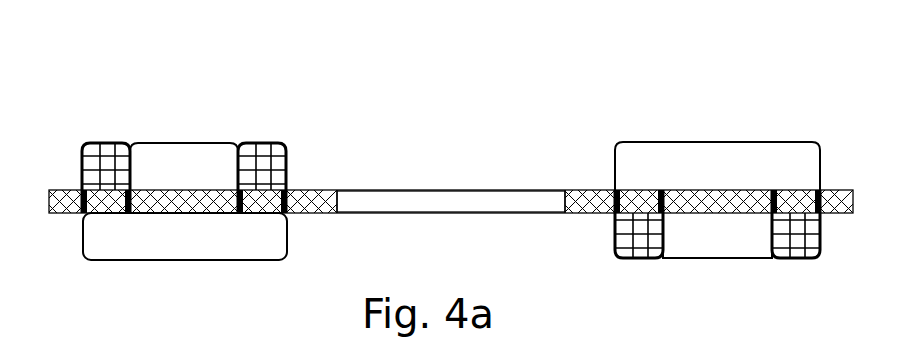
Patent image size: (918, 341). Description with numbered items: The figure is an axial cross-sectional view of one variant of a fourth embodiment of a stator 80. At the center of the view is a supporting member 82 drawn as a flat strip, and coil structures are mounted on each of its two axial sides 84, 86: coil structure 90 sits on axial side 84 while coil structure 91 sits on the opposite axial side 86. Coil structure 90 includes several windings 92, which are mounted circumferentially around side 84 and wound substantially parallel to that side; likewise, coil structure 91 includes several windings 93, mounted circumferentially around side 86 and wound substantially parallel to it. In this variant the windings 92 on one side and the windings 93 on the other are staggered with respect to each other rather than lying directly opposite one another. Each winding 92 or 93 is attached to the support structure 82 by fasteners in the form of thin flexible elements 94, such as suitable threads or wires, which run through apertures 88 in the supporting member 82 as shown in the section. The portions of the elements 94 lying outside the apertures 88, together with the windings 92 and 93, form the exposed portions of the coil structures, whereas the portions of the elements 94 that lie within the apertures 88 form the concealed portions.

The stator 80 is at (532, 90).
The supporting member 82 is at (827, 213).
The axial side 84 is at (323, 188).
The axial side 86 is at (328, 215).
The apertures 88 is at (80, 190).
The coil structure 90 is at (238, 123).
The coil structure 91 is at (78, 250).
The winding 92 is at (198, 175).
The winding 93 is at (201, 251).
The thin flexible elements 94 is at (78, 148).